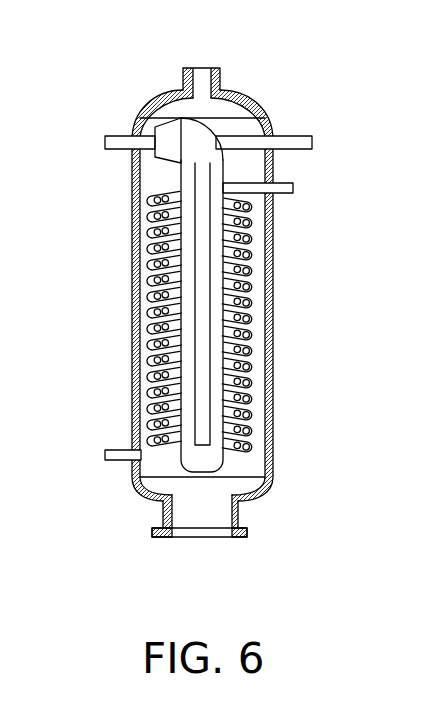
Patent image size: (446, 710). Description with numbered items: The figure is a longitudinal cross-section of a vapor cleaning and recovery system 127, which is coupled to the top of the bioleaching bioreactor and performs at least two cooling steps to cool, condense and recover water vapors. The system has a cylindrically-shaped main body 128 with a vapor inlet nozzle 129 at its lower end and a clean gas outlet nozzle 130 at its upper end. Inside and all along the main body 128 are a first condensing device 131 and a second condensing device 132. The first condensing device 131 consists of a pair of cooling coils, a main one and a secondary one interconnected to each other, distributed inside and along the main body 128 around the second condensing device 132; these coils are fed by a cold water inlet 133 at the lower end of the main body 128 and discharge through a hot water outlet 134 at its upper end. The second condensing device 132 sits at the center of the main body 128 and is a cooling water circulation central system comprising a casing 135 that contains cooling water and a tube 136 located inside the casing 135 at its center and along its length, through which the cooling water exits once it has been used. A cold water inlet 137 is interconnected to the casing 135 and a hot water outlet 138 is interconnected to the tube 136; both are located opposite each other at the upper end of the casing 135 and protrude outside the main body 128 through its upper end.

The vapor cleaning and recovery system 127 is at (213, 307).
The main body 128 is at (133, 328).
The vapor inlet nozzle 129 is at (200, 527).
The clean gas outlet nozzle 130 is at (187, 72).
The first condensing device 131 is at (152, 213).
The second condensing device 132 is at (202, 200).
The cold water inlet 133 is at (105, 453).
The hot water outlet 134 is at (293, 186).
The casing 135 is at (226, 356).
The tube 136 is at (210, 417).
The cold water inlet 137 is at (105, 143).
The hot water outlet 138 is at (312, 143).